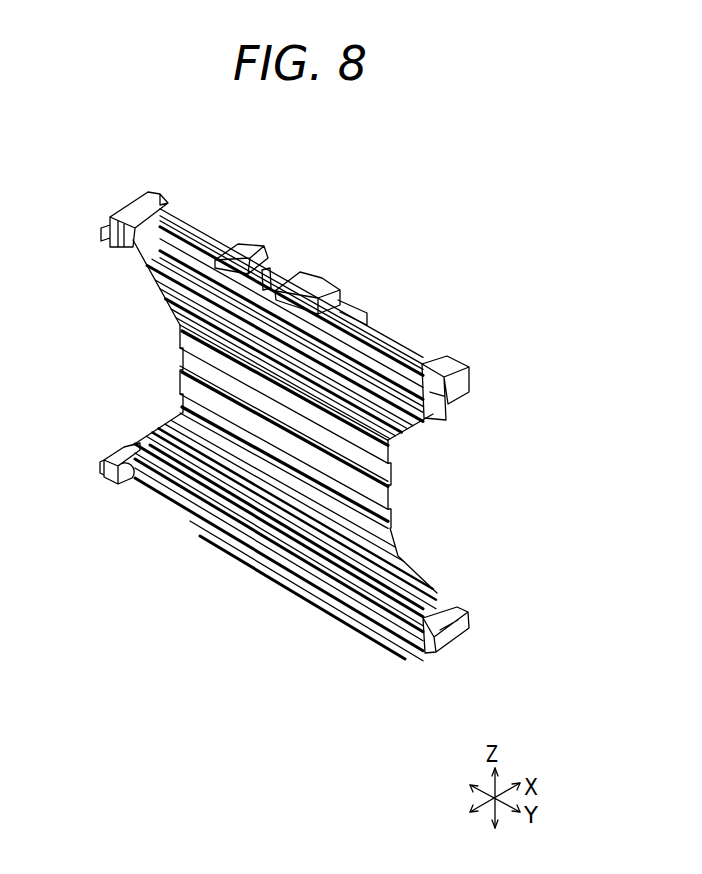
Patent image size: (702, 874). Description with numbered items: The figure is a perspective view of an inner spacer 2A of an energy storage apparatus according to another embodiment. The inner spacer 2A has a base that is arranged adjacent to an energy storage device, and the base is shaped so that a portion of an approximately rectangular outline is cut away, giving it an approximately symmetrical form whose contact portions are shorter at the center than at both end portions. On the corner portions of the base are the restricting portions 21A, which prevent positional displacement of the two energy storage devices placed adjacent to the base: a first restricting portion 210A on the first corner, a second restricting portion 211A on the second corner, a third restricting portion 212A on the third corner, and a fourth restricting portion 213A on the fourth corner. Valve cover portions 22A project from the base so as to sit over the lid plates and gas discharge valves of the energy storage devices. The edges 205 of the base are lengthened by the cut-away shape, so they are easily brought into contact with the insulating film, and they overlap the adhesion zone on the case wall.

The inner spacer 2A is at (402, 258).
The restricting portions 21A is at (330, 418).
The first restricting portion 210A is at (135, 203).
The second restricting portion 211A is at (445, 398).
The third restricting portion 212A is at (132, 482).
The fourth restricting portion 213A is at (447, 637).
The valve cover portions 22A is at (305, 288).
The edges 205 is at (159, 432).